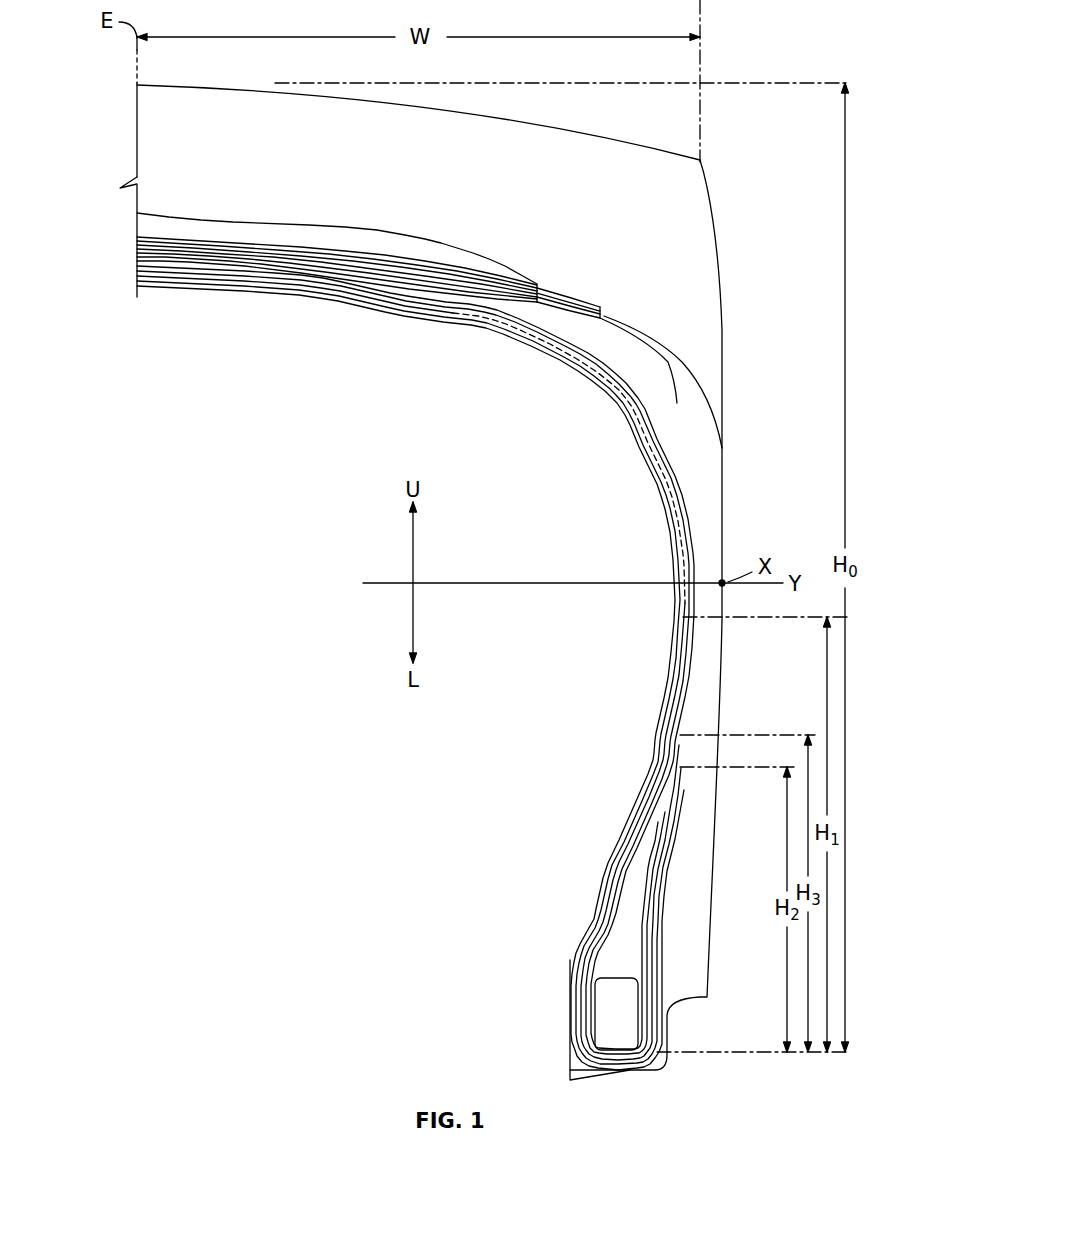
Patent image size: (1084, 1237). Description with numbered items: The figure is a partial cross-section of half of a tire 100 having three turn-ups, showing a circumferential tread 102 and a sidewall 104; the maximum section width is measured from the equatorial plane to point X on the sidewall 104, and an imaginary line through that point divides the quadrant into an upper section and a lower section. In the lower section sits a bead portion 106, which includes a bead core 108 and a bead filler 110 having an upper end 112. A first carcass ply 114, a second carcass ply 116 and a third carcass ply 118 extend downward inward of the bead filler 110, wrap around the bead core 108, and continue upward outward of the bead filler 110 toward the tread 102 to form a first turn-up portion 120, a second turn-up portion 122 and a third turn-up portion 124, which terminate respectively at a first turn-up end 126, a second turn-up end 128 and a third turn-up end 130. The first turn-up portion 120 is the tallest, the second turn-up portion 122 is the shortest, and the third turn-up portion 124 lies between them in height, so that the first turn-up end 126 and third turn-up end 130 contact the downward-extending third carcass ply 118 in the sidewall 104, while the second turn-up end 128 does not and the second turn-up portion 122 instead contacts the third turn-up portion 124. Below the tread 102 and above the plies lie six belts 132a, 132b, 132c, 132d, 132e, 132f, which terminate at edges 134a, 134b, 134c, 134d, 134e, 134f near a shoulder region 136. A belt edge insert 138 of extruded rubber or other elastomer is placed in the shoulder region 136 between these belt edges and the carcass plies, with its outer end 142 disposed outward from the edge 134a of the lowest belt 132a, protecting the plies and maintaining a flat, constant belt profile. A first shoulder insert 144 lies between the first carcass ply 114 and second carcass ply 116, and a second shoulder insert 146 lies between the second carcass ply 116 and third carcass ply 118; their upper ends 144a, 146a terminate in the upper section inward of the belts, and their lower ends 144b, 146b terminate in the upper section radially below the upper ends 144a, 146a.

The tire 100 is at (730, 311).
The circumferential tread 102 is at (577, 130).
The sidewall 104 is at (728, 449).
The bead portion 106 is at (558, 954).
The bead core 108 is at (603, 1027).
The bead filler 110 is at (617, 922).
The upper end 112 is at (667, 820).
The first carcass ply 114 is at (368, 297).
The second carcass ply 116 is at (318, 289).
The third carcass ply 118 is at (262, 278).
The first turn-up portion 120 is at (685, 790).
The second turn-up portion 122 is at (678, 810).
The third turn-up portion 124 is at (673, 788).
The first turn-up end 126 is at (683, 617).
The second turn-up end 128 is at (680, 767).
The third turn-up end 130 is at (678, 737).
The belt 132a is at (150, 260).
The belt 132b is at (200, 256).
The belt 132c is at (250, 254).
The belt 132d is at (302, 257).
The belt 132e is at (345, 260).
The belt 132f is at (388, 258).
The edge 134a is at (600, 316).
The edge 134b is at (560, 300).
The edge 134c is at (600, 312).
The edge 134d is at (540, 294).
The edge 134e is at (600, 308).
The edge 134f is at (538, 294).
The shoulder region 136 is at (727, 412).
The belt edge insert 138 is at (647, 368).
The outer end 142 is at (677, 404).
The first shoulder insert 144 is at (652, 449).
The upper end 144a is at (510, 325).
The lower end 144b is at (660, 508).
The second shoulder insert 146 is at (642, 413).
The upper end 146a is at (512, 314).
The lower end 146b is at (683, 504).